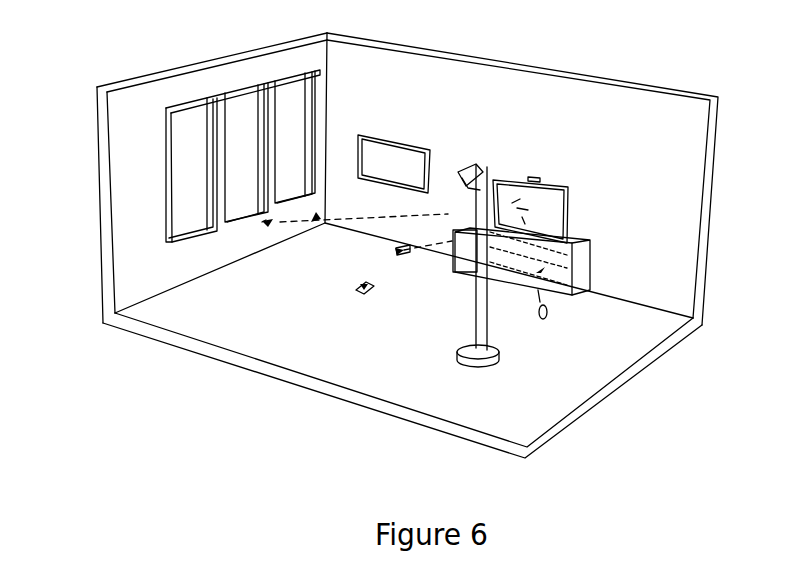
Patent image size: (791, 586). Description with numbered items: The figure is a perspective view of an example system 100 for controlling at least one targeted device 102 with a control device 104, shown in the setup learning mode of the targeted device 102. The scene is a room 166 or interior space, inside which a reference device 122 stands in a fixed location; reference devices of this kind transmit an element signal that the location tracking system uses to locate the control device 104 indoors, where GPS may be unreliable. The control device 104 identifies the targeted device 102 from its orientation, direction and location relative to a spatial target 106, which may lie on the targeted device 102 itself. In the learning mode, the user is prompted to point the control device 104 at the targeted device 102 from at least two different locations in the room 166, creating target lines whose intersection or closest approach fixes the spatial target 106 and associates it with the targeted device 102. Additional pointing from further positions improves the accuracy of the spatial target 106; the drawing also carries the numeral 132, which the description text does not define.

The system 100 is at (172, 44).
The targeted device 102 is at (573, 218).
The control device 104 is at (415, 339).
The spatial target 106 is at (533, 174).
The reference device 122 is at (424, 311).
The sensing beam / sensor 132 is at (475, 182).
The room 166 is at (101, 222).